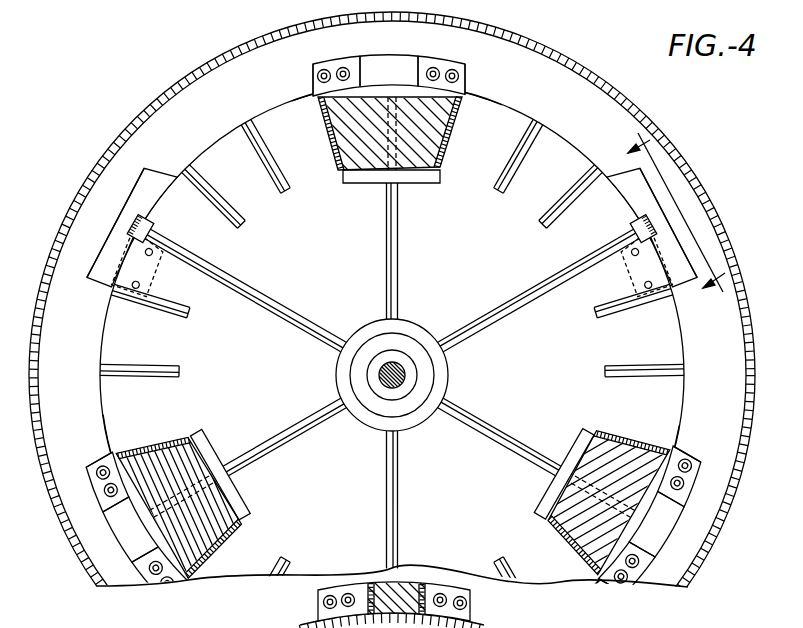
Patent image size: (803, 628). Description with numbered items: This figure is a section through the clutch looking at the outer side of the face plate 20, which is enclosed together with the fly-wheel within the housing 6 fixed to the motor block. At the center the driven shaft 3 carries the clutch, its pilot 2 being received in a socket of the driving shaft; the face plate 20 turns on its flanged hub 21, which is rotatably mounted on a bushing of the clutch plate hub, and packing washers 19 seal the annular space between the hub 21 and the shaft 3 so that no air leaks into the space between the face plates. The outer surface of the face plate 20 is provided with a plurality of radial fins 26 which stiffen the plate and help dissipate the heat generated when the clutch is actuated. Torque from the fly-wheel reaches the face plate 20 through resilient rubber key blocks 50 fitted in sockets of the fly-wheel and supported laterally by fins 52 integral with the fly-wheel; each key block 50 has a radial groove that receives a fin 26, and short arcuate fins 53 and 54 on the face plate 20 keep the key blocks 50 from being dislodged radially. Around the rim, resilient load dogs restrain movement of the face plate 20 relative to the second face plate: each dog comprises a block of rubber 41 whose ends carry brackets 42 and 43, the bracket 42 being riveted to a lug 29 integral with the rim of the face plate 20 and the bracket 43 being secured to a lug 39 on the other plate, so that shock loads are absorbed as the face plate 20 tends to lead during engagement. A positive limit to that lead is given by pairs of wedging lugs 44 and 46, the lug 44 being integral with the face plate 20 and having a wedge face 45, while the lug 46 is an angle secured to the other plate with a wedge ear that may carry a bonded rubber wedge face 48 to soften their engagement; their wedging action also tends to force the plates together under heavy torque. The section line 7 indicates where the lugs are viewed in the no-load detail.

The pilot 2 is at (405, 372).
The driven shaft 3 is at (408, 383).
The housing 6 is at (585, 70).
The section line 7- 7 is at (670, 223).
The packing washers 19 is at (417, 400).
The face plate 20 is at (98, 357).
The flanged hub 21 is at (413, 420).
The fins 26 is at (450, 150).
The lug 29 is at (602, 578).
The lug 39 is at (318, 607).
The block of rubber 41 is at (663, 525).
The bracket 42 is at (470, 590).
The bracket 43 is at (323, 592).
The wedging lug 44 is at (108, 260).
The wedge face 45 is at (118, 250).
The wedging lug 46 is at (138, 192).
The rubber wedge face 48 is at (112, 230).
The key blocks 50 is at (575, 532).
The fins 52 is at (553, 532).
The arcuate fin 53 is at (563, 488).
The arcuate fin 54 is at (680, 447).